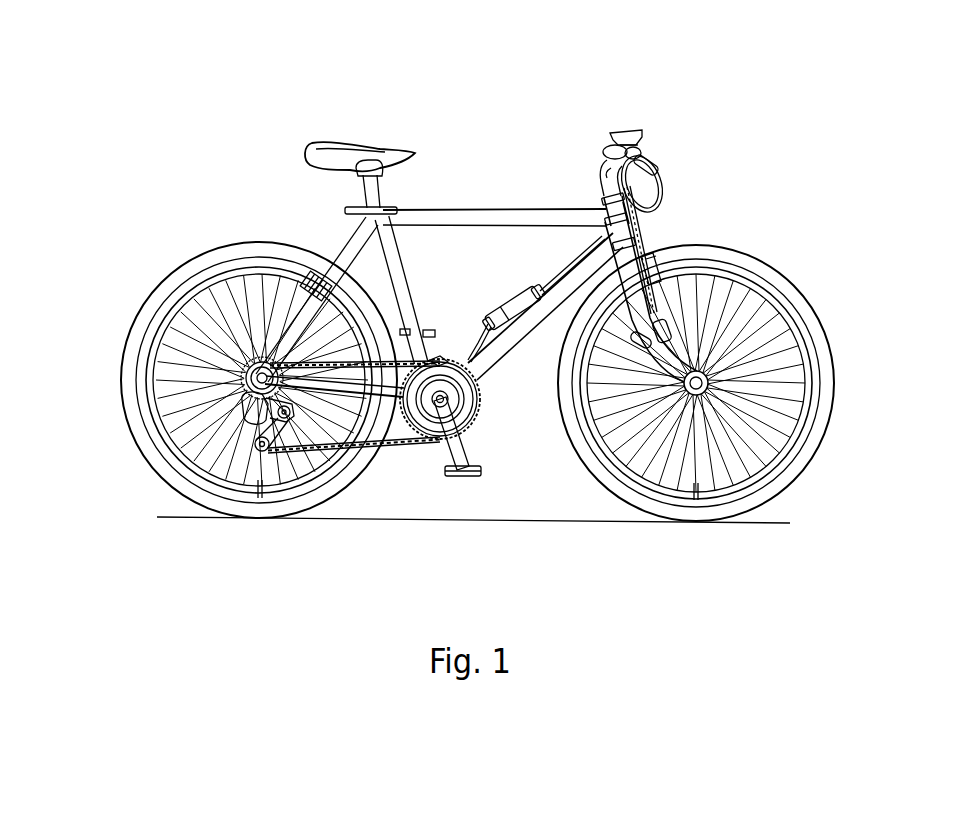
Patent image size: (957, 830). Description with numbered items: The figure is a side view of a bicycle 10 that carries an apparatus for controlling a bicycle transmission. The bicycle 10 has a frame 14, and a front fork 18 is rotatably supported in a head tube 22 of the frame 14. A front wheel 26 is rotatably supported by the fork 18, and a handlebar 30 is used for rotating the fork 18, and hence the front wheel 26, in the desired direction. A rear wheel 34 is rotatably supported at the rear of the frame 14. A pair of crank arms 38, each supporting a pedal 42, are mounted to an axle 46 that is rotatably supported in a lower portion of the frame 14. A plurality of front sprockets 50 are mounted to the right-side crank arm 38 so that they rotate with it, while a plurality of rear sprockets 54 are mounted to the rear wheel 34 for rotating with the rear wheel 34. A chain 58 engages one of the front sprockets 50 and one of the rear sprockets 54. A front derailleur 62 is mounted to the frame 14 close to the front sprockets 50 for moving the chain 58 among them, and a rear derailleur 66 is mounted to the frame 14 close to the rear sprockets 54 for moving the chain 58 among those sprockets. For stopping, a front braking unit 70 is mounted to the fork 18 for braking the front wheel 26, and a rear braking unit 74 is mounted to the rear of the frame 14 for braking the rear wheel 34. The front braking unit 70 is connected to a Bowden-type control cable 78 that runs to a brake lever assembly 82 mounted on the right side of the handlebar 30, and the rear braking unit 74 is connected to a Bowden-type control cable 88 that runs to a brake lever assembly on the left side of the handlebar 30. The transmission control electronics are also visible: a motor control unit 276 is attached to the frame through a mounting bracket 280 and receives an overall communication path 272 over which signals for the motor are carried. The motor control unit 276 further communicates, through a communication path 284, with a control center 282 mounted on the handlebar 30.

The bicycle 10 is at (342, 77).
The frame 14 is at (485, 215).
The front fork 18 is at (653, 256).
The head tube 22 is at (606, 210).
The front wheel 26 is at (790, 292).
The handlebar 30 is at (604, 150).
The rear wheel 34 is at (150, 303).
The crank arms 38 is at (452, 443).
The pedal 42 is at (478, 474).
The axle 46 is at (448, 401).
The front sprockets 50 is at (476, 393).
The rear sprockets 54 is at (233, 372).
The chain 58 is at (396, 452).
The front derailleur 62 is at (434, 360).
The rear derailleur 66 is at (247, 413).
The front braking unit 70 is at (659, 272).
The rear braking unit 74 is at (308, 273).
The Bowden-type control cable 78 is at (633, 257).
The brake lever assembly 82 is at (657, 170).
The Bowden-type control cable 88 is at (347, 242).
The communication path 272 is at (480, 345).
The motor control unit 276 is at (507, 302).
The mounting bracket 280 is at (505, 320).
The control center 282 is at (627, 130).
The communication path 284 is at (558, 282).